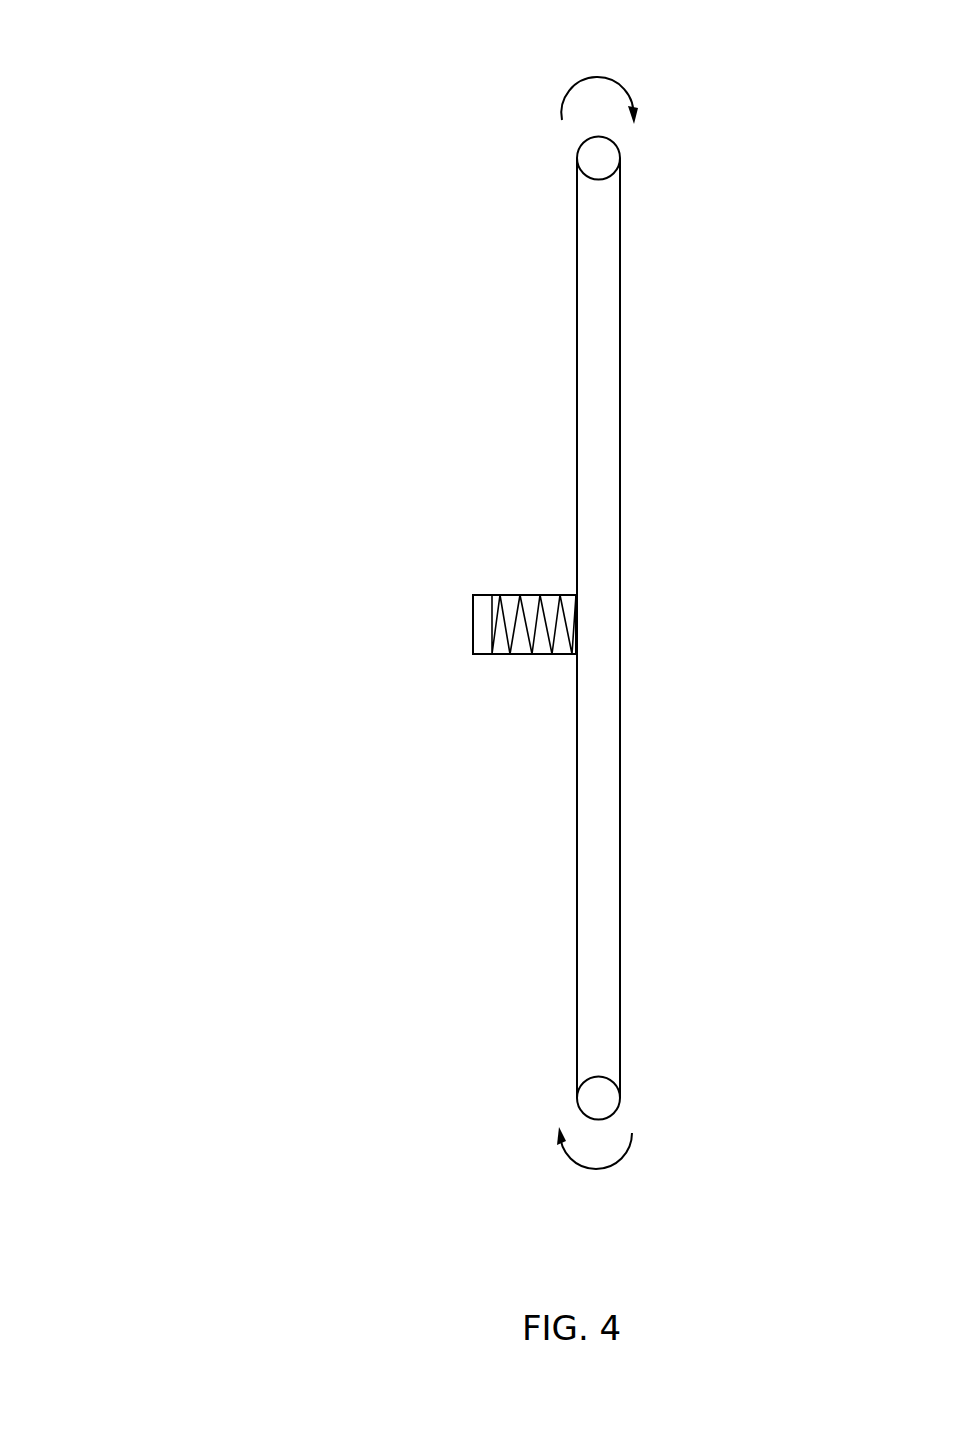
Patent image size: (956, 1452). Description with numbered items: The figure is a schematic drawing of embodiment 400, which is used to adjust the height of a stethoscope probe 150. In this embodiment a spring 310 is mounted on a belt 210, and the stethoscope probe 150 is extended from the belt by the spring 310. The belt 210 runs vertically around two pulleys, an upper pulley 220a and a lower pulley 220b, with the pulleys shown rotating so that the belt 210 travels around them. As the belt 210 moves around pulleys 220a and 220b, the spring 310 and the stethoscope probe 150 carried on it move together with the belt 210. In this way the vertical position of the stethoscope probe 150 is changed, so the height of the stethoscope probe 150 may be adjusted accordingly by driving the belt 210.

The embodiment 400 is at (208, 58).
The belt 210 is at (620, 878).
The pulley 220a is at (620, 160).
The pulley 220b is at (620, 1100).
The stethoscope probe 150 is at (486, 600).
The spring 310 is at (525, 656).